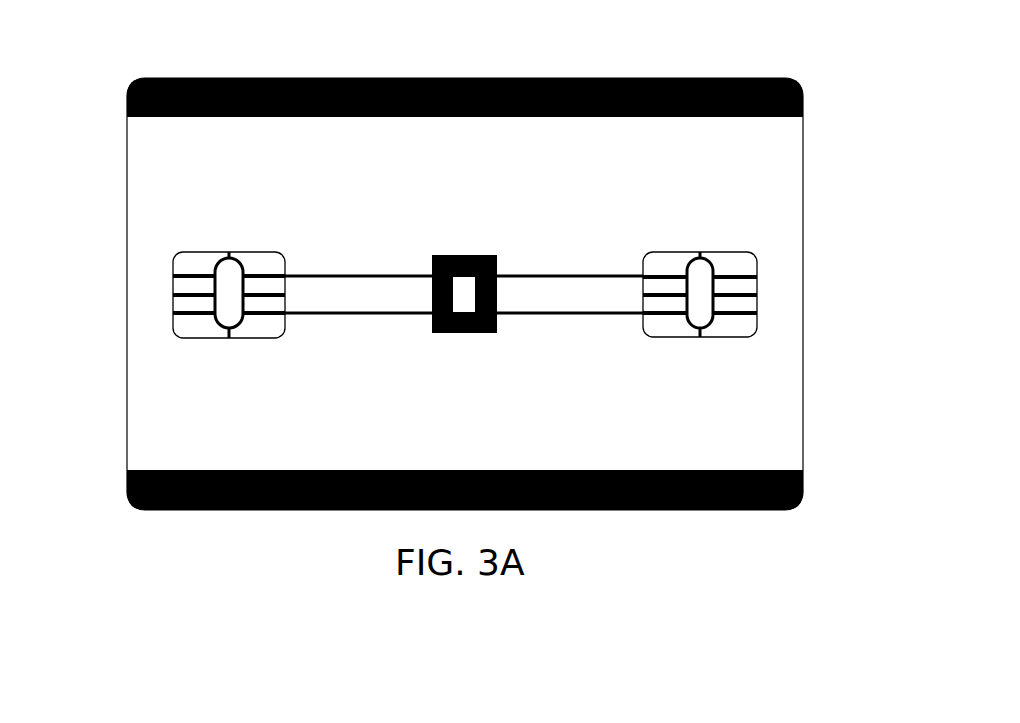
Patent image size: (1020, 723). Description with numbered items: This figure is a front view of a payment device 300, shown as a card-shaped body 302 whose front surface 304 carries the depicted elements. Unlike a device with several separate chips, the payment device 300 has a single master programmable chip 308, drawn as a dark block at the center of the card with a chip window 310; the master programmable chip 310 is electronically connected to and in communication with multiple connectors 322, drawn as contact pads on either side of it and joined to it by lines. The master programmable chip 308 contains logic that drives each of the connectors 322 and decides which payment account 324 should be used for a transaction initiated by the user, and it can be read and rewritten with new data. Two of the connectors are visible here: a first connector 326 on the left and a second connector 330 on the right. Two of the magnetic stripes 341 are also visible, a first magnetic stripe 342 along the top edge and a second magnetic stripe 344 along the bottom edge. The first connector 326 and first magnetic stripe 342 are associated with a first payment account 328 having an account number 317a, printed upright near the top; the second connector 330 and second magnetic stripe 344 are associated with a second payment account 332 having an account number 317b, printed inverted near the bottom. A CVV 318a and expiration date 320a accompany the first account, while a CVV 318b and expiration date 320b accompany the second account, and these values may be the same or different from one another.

The payment device 300 is at (750, 56).
The card body 302 is at (782, 125).
The card surface 304 is at (742, 160).
The master programmable chip 308 is at (459, 245).
The master programmable chip 310 is at (460, 294).
The account number 317a is at (578, 150).
The account number 317b is at (352, 440).
The CVV 318a is at (158, 188).
The CVV 318b is at (770, 400).
The expiration date 320a is at (278, 204).
The expiration date 320b is at (642, 388).
The connectors 322 is at (226, 352).
The payment account 324 is at (548, 180).
The first connector 326 is at (262, 328).
The first payment account 328 is at (214, 150).
The second connector 330 is at (678, 337).
The second payment account 332 is at (724, 438).
The magnetic stripes 341 is at (540, 72).
The first magnetic stripe 342 is at (330, 78).
The second magnetic stripe 344 is at (170, 512).